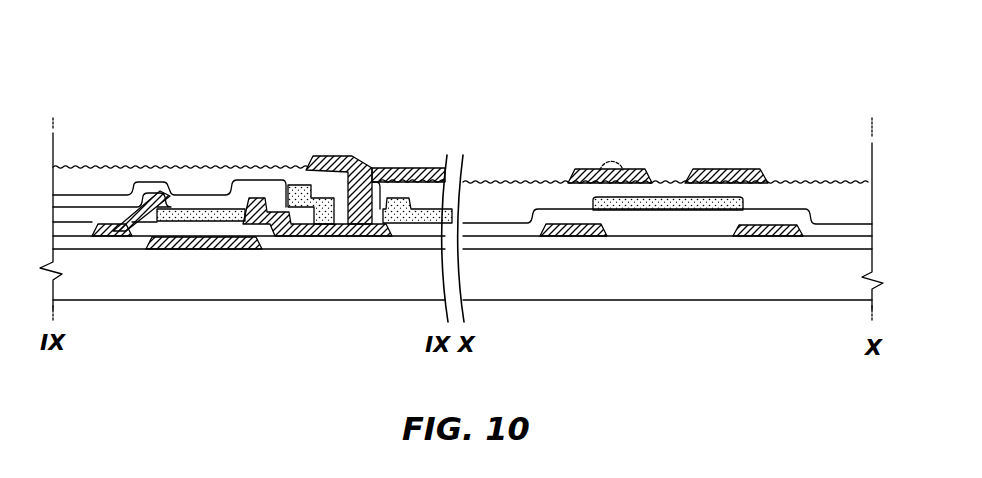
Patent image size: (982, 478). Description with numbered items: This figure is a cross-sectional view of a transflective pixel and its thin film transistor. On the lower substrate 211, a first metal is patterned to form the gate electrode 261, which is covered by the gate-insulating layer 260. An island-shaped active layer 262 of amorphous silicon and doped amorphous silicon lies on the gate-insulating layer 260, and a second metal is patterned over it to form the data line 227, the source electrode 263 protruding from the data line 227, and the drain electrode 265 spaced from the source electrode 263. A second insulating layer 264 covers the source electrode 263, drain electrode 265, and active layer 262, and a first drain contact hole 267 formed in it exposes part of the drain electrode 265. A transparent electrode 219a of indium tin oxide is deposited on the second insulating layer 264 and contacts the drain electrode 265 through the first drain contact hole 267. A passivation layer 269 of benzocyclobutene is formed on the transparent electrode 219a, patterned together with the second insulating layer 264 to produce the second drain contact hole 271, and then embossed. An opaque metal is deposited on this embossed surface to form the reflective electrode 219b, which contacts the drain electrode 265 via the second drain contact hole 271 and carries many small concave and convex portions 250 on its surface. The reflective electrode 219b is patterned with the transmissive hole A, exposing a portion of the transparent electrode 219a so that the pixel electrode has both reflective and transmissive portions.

The lower substrate 211 is at (250, 273).
The transparent electrode 219a is at (303, 186).
The reflective electrode 219b is at (422, 167).
The data line 227 is at (577, 238).
The concave and convex portions 250 is at (610, 158).
The gate-insulating layer 260 is at (103, 240).
The gate electrode 261 is at (197, 240).
The active layer 262 is at (210, 216).
The source electrode 263 is at (110, 228).
The second insulating layer 264 is at (145, 181).
The drain electrode 265 is at (262, 216).
The first drain contact hole 267 is at (323, 214).
The passivation layer 269 is at (78, 164).
The second drain contact hole 271 is at (366, 166).
The transmissive hole A is at (666, 160).